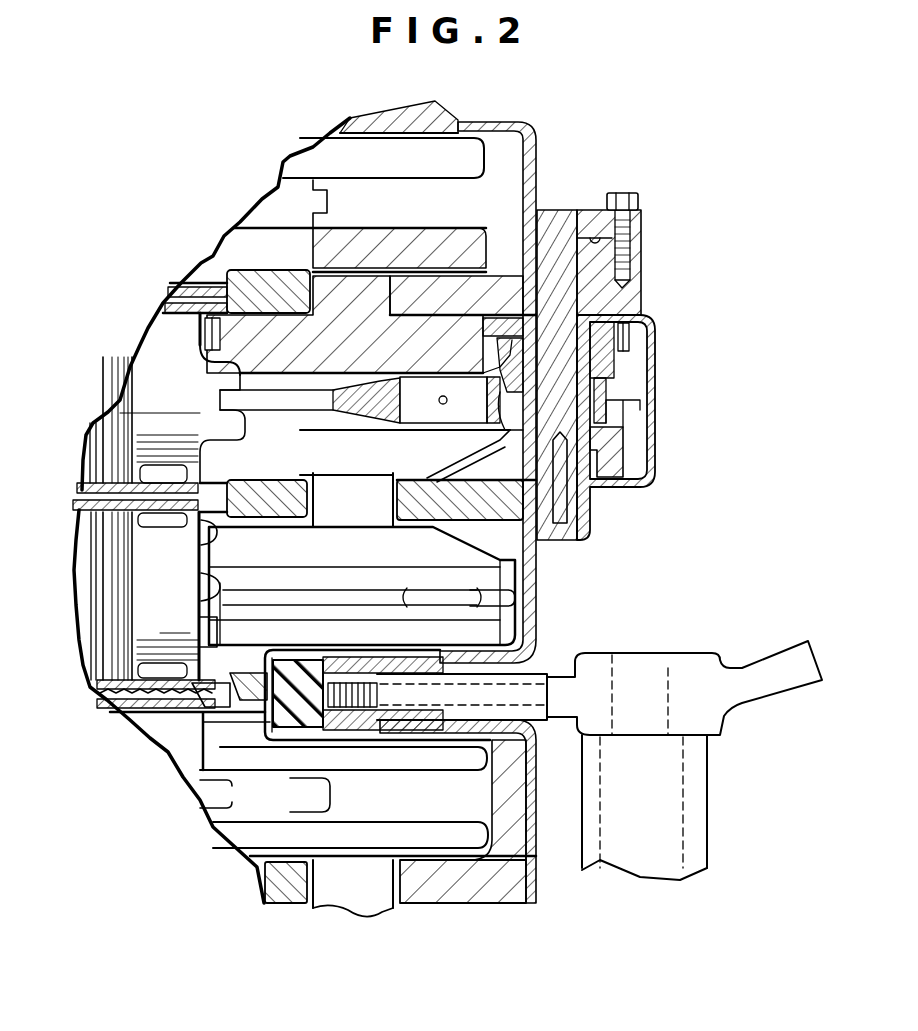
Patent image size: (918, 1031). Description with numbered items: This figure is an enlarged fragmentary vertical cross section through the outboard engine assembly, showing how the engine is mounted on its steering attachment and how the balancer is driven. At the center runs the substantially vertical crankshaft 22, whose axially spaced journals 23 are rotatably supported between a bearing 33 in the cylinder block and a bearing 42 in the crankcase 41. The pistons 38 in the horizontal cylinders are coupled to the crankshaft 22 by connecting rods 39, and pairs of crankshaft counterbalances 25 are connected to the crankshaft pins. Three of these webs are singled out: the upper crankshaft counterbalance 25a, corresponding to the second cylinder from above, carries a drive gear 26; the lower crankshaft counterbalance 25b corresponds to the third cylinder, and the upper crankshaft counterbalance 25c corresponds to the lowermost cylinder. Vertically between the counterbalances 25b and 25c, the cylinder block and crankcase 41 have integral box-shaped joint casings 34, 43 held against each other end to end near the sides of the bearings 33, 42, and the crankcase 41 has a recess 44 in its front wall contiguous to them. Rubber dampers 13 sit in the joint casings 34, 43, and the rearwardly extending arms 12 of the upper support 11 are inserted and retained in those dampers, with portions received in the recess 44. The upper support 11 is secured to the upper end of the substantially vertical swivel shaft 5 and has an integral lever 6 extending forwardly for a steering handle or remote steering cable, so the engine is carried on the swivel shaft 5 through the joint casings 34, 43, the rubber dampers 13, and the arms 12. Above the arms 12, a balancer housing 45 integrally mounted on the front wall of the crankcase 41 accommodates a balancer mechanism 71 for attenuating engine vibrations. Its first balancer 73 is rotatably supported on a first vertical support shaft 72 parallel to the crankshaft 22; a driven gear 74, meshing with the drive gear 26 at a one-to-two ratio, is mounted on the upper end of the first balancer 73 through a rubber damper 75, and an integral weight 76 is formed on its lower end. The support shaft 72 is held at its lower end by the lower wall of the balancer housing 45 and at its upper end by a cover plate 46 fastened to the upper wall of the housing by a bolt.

The crankcase 41 is at (536, 136).
The first vertical support shaft 72 is at (548, 240).
The cover plate 46 is at (640, 213).
The driven gear 74 is at (643, 314).
The rubber damper 75 is at (640, 350).
The balancer housing 45 is at (656, 400).
The balancer mechanism 71 is at (632, 418).
The weight 76 is at (637, 455).
The first balancer 73 is at (540, 405).
The bearing 33 is at (280, 287).
The crankshaft counterbalance 25 is at (423, 155).
The upper crankshaft counterbalance 25a is at (470, 300).
The lower crankshaft counterbalance 25b is at (207, 635).
The upper crankshaft counterbalance 25c is at (378, 757).
The drive gear 26 is at (207, 365).
The piston 38 is at (105, 445).
The connecting rod 39 is at (302, 398).
The journal 23 is at (360, 497).
The bearing 42 is at (415, 500).
The joint casing 43 is at (394, 655).
The rubber damper 13 is at (220, 722).
The joint casing 34 is at (293, 705).
The arm 12 is at (458, 702).
The recess 44 is at (527, 728).
The upper support 11 is at (570, 693).
The lever 6 is at (773, 668).
The swivel shaft 5 is at (683, 813).
The crankshaft 22 is at (357, 925).